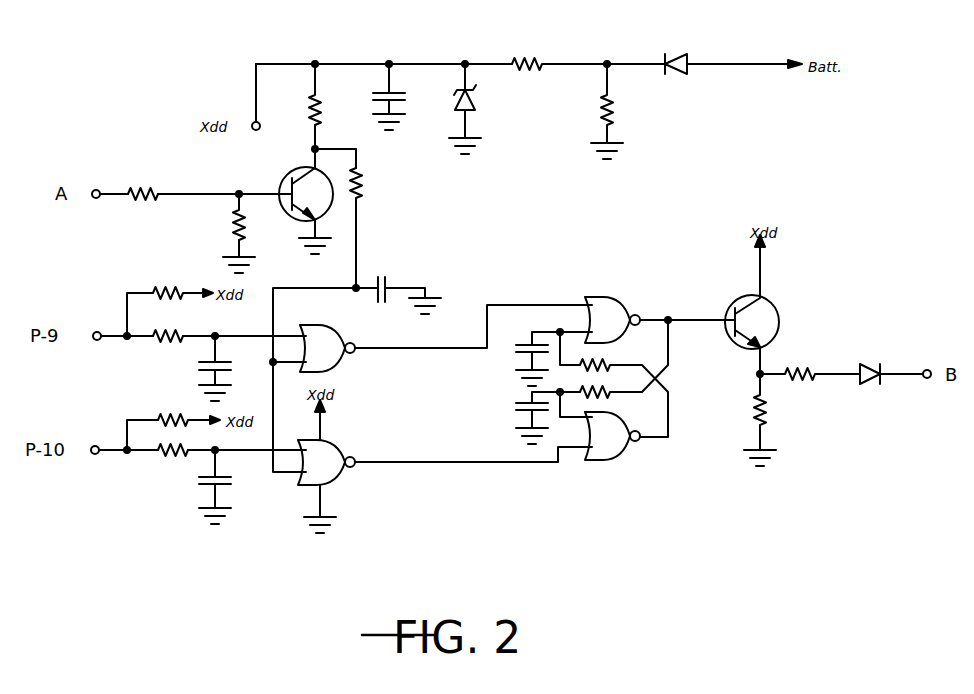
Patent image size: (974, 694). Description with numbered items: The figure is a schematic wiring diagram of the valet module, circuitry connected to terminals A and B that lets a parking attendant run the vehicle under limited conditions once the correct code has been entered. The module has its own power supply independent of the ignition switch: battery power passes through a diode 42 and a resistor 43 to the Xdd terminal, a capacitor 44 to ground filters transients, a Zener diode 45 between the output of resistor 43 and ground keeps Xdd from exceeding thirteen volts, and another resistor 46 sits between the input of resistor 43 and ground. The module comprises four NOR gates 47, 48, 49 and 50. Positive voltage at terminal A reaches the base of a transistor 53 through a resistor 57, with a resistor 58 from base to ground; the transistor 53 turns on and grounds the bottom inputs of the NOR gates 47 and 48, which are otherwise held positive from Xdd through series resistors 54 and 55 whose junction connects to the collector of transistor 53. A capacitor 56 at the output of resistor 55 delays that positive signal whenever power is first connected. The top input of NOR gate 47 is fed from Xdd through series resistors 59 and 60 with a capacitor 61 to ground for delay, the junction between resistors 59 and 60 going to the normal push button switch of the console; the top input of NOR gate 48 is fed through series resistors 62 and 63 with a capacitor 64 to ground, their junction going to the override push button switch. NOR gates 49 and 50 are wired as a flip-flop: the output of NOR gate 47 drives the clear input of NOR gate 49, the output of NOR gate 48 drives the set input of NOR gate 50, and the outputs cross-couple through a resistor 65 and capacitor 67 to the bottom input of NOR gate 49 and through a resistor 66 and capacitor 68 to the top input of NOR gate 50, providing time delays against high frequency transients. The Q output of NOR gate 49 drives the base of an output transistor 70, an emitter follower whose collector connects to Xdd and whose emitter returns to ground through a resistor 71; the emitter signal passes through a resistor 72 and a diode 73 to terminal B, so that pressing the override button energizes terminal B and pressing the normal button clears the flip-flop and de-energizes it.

The diode 42 is at (662, 54).
The resistor 43 is at (514, 60).
The capacitor 44 is at (386, 90).
The Zener diode 45 is at (460, 88).
The resistor 46 is at (600, 98).
The NOR gate 47 is at (331, 357).
The NOR gate 48 is at (329, 471).
The NOR gate 49 is at (616, 330).
The NOR gate 50 is at (616, 446).
The transistor 53 is at (300, 175).
The resistor 54 is at (312, 95).
The resistor 55 is at (363, 176).
The capacitor 56 is at (386, 275).
The resistor 57 is at (138, 185).
The resistor 58 is at (232, 222).
The resistor 59 is at (158, 284).
The resistor 60 is at (170, 332).
The capacitor 61 is at (224, 362).
The resistor 62 is at (172, 414).
The resistor 63 is at (180, 458).
The capacitor 64 is at (226, 483).
The resistor 65 is at (606, 360).
The resistor 66 is at (607, 397).
The capacitor 67 is at (524, 340).
The capacitor 68 is at (520, 400).
The output transistor 70 is at (770, 300).
The resistor 71 is at (752, 400).
The resistor 72 is at (800, 365).
The diode 73 is at (880, 365).